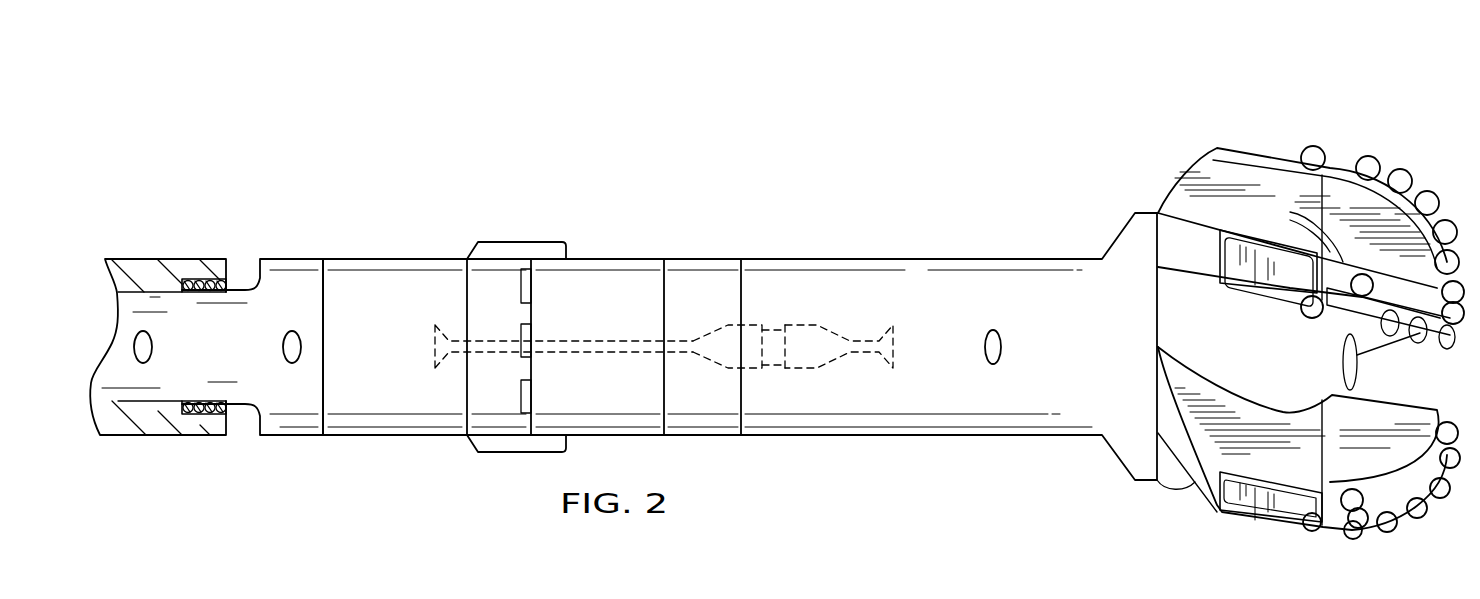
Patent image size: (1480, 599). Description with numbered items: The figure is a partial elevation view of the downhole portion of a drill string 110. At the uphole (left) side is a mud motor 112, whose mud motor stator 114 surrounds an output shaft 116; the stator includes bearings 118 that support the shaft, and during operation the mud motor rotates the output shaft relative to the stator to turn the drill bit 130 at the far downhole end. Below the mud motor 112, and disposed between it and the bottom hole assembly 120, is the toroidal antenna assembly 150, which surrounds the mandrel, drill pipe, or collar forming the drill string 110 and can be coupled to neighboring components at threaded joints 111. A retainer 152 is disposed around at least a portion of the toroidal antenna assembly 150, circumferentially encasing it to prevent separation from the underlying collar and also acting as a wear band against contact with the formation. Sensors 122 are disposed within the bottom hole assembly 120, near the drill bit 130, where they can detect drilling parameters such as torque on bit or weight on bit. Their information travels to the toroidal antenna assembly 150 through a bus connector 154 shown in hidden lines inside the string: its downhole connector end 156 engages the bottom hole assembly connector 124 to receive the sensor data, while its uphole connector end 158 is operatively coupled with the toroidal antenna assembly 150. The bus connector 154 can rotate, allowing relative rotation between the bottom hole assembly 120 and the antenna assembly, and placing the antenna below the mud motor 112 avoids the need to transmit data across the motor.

The drill string 110 is at (1126, 90).
The threaded joints 111 is at (333, 290).
The mud motor 112 is at (219, 230).
The mud motor stator 114 is at (137, 268).
The output shaft 116 is at (286, 420).
The bearings 118 is at (208, 414).
The bottom hole assembly 120 is at (918, 266).
The sensors 122 is at (1002, 347).
The bottom hole assembly connector 124 is at (802, 323).
The drill bit 130 is at (1262, 148).
The toroidal antenna assembly 150 is at (579, 210).
The retainer 152 is at (520, 250).
The bus connector 154 is at (680, 340).
The downhole connector end 156 is at (746, 372).
The uphole connector end 158 is at (430, 342).